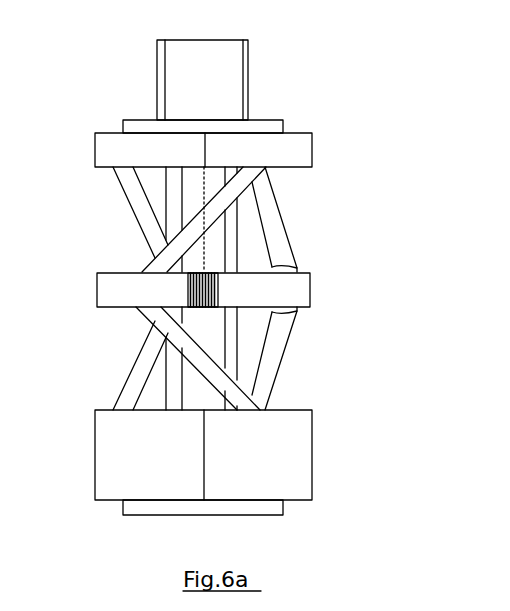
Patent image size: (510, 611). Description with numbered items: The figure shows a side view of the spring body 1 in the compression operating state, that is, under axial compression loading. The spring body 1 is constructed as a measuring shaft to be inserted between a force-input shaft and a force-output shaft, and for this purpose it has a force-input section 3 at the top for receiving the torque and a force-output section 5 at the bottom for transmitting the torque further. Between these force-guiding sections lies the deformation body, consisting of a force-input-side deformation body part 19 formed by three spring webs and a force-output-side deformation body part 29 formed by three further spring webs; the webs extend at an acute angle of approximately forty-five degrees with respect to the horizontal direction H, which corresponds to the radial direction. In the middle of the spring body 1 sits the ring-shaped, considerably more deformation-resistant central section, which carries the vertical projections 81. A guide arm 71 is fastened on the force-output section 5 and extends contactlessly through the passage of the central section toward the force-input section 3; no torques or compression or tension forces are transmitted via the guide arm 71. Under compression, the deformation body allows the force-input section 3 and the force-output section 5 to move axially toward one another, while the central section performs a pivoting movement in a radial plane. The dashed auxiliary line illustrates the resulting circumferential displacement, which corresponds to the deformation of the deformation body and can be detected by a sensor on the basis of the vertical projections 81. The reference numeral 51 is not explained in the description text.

The spring body 1 is at (362, 93).
The force-input section 3 is at (122, 128).
The horizontal direction H is at (205, 183).
The force-input-side deformation body part 19 is at (273, 223).
The vertical projections 81 is at (190, 273).
The sensor 51 is at (197, 288).
The guide arm 71 is at (213, 337).
The force-output-side deformation body part 29 is at (268, 367).
The force-output section 5 is at (125, 500).